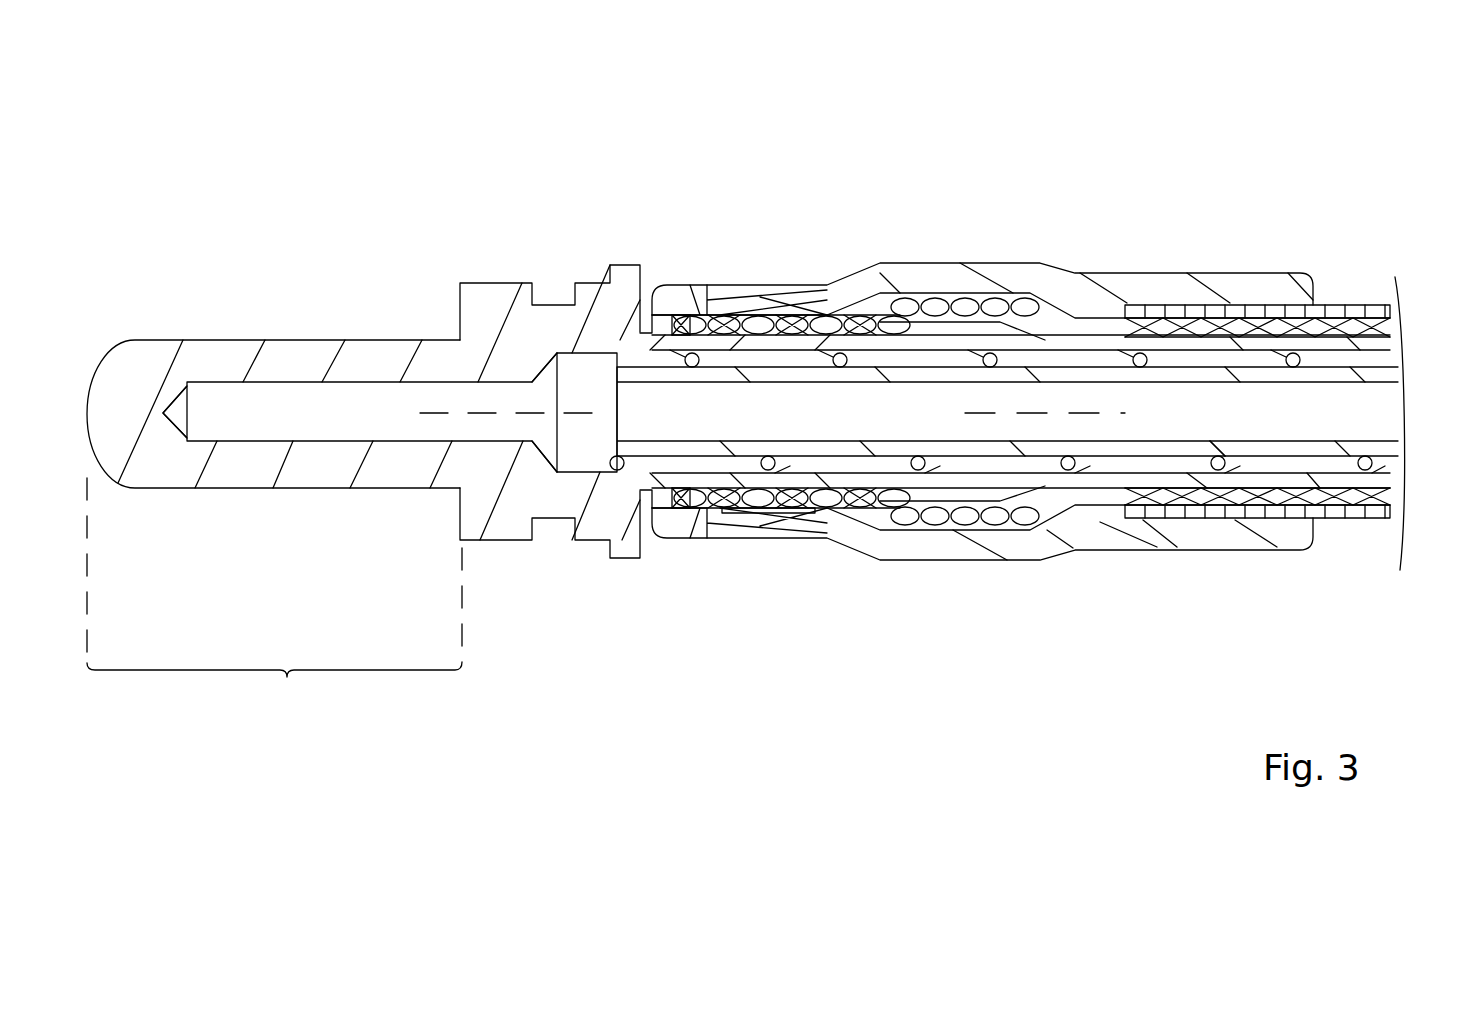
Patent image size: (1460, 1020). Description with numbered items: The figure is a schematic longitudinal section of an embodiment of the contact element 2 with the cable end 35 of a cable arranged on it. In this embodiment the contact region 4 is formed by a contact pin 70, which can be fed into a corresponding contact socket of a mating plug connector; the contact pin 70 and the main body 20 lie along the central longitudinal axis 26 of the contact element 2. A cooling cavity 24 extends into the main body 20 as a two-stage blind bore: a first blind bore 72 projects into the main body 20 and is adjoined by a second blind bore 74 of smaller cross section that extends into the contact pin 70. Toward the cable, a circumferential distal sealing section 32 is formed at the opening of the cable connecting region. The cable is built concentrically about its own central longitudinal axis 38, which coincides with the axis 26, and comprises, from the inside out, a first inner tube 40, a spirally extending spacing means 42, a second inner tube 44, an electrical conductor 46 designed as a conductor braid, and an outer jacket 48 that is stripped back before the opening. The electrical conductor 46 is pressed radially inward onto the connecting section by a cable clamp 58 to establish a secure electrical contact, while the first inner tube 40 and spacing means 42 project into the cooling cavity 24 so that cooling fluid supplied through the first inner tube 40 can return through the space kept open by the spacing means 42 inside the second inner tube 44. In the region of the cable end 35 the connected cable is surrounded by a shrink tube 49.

The contact element 2 is at (390, 150).
The contact region 4 is at (274, 604).
The main body 20 is at (489, 297).
The cooling cavity 24 is at (578, 452).
The central longitudinal axis 26 is at (438, 418).
The distal sealing section 32 is at (950, 340).
The cable end 35 is at (785, 728).
The central longitudinal axis 38 is at (1050, 410).
The first inner tube 40 is at (1320, 447).
The spacing means 42 is at (1368, 470).
The second inner tube 44 is at (927, 335).
The electrical conductor 46 is at (1367, 305).
The outer jacket 48 is at (1152, 310).
The shrink tube 49 is at (1232, 548).
The cable clamp 58 is at (783, 513).
The contact pin 70 is at (222, 345).
The first blind bore 72 is at (597, 372).
The second blind bore 74 is at (375, 415).